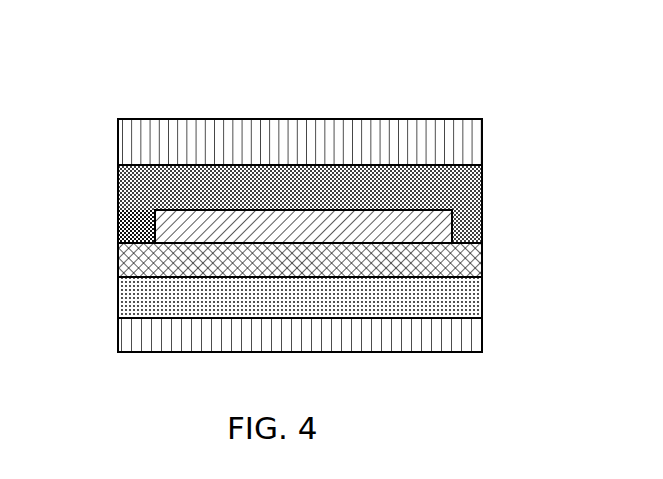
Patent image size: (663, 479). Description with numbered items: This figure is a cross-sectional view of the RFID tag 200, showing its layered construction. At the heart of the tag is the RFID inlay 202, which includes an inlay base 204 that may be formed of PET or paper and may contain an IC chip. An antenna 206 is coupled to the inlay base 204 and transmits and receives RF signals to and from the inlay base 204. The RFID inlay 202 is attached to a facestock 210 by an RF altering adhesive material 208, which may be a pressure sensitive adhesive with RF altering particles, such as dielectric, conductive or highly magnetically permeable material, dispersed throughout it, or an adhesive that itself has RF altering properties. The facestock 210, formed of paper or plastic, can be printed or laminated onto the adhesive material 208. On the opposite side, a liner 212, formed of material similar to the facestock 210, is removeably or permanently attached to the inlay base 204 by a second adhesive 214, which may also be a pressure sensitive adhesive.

The RFID tag 200 is at (132, 57).
The RFID inlay 202 is at (148, 238).
The inlay base 204 is at (483, 260).
The antenna 206 is at (400, 210).
The RF altering adhesive material 208 is at (483, 198).
The facestock 210 is at (483, 139).
The liner 212 is at (483, 337).
The second adhesive 214 is at (483, 291).